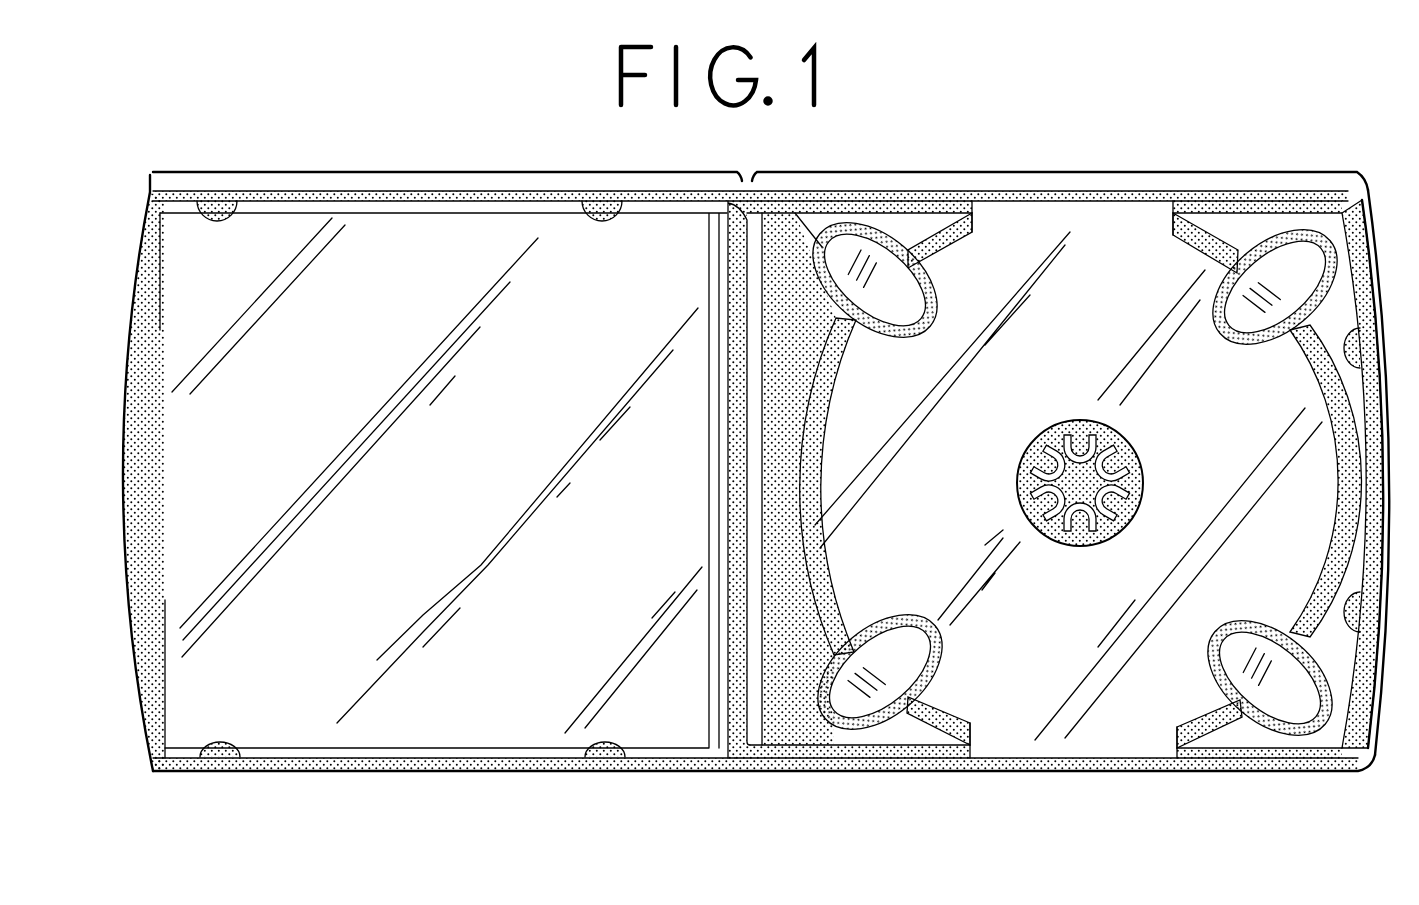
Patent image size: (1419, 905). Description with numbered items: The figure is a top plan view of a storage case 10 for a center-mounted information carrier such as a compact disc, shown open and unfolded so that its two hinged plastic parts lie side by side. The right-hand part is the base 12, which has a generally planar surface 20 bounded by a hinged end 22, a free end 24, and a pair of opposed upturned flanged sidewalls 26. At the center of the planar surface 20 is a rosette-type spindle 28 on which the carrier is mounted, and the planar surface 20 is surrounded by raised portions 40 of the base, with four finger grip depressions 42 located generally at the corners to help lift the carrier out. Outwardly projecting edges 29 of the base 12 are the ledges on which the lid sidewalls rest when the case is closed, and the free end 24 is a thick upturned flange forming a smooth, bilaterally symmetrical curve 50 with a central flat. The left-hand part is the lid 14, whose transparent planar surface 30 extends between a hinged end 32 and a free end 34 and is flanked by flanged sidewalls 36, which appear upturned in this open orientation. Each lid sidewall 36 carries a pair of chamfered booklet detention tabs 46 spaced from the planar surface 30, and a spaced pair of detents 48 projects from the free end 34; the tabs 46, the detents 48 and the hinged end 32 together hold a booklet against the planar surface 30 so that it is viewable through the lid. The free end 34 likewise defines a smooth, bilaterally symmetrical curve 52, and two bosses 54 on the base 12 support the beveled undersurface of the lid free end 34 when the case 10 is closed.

The storage case 10 is at (263, 131).
The base 12 is at (1068, 480).
The lid 14 is at (706, 480).
The planar surface 20 is at (1090, 768).
The hinged end 22 is at (772, 766).
The free end 24 is at (1388, 555).
The flanged sidewalls 26 is at (980, 210).
The spindle 28 is at (1105, 545).
The outwardly projecting edges 29 is at (1027, 203).
The planar surface 30 is at (508, 705).
The hinged end 32 is at (740, 774).
The free end 34 is at (137, 533).
The flanged sidewalls 36 is at (360, 197).
The raised portions 40 is at (800, 332).
The finger grip depressions 42 is at (908, 315).
The booklet detention tabs 46 is at (217, 225).
The detents 48 is at (167, 322).
The curve 50 is at (1402, 457).
The curve 52 is at (122, 487).
The boss 54 is at (1341, 352).